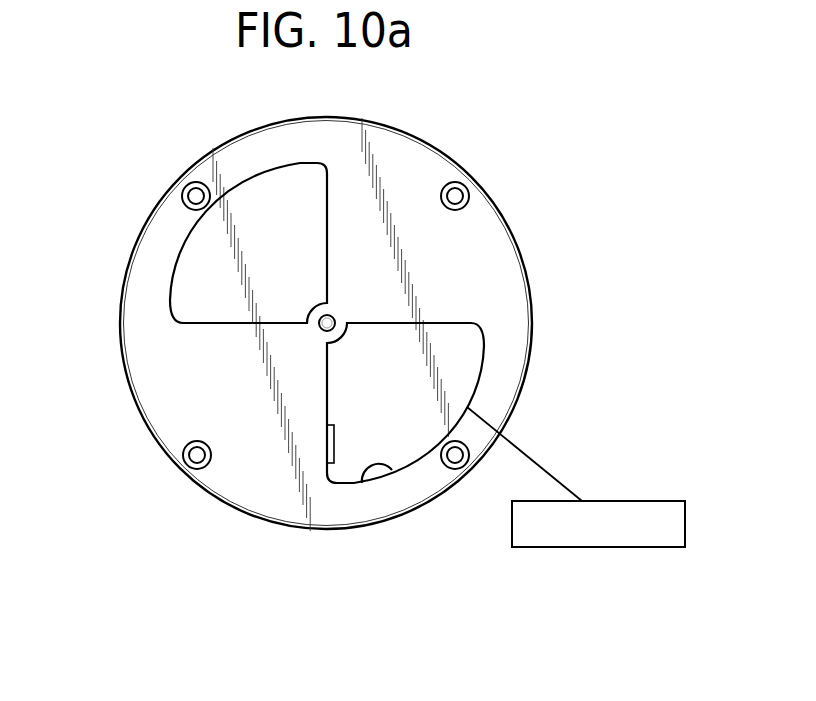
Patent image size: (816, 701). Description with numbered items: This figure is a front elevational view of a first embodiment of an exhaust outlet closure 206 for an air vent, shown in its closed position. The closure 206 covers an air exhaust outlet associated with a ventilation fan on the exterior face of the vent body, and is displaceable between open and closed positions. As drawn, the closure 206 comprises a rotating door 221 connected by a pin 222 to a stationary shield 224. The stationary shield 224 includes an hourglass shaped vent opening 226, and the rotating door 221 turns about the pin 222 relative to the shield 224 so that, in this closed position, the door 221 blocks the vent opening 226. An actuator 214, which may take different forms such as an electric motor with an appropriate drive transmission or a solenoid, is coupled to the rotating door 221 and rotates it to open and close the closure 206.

The closure 206 is at (556, 177).
The rotating door 221 is at (287, 222).
The pin 222 is at (320, 325).
The stationary shield 224 is at (252, 463).
The hourglass shaped vent opening 226 is at (392, 468).
The actuator 214 is at (575, 547).